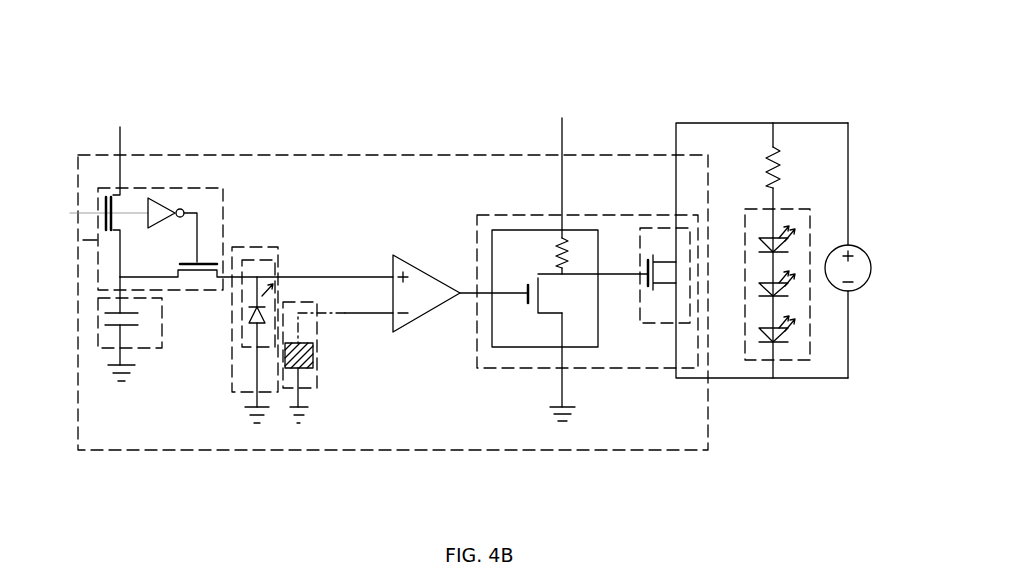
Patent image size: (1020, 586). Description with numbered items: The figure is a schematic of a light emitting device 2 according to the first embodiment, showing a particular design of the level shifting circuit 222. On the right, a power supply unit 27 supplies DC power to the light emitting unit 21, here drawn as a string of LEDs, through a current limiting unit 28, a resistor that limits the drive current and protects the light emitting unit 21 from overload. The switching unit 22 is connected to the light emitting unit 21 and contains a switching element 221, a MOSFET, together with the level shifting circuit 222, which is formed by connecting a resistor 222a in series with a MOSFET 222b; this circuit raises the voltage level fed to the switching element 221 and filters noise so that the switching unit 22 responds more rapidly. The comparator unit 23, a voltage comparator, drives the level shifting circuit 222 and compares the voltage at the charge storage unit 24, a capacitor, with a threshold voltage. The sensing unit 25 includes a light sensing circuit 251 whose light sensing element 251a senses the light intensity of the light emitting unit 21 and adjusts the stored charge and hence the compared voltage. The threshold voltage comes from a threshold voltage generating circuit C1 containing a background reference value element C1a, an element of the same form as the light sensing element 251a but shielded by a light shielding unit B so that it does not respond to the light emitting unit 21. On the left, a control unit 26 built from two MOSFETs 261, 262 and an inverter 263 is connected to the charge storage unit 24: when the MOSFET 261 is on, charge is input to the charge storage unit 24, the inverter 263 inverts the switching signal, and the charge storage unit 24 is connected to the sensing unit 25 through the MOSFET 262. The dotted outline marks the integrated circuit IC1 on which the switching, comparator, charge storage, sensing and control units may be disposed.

The light emitting device 2 is at (88, 40).
The integrated circuit IC1 is at (493, 155).
The light emitting unit 21 is at (812, 338).
The switching unit 22 is at (575, 215).
The switching element 221 is at (650, 326).
The level shifting circuit 222 is at (510, 348).
The resistor 222a is at (560, 238).
The MOSFET 222b is at (526, 286).
The comparator unit 23 is at (404, 256).
The charge storage unit 24 is at (153, 348).
The sensing unit 25 is at (276, 246).
The light sensing circuit 251 is at (257, 260).
The light sensing element 251a is at (253, 311).
The control unit 26 is at (77, 240).
The MOSFET 261 is at (117, 195).
The MOSFET 262 is at (205, 262).
The inverter 263 is at (160, 200).
The power supply unit 27 is at (873, 263).
The current limiting unit 28 is at (785, 167).
The threshold voltage generating circuit C1 is at (308, 333).
The background reference value element C1a is at (316, 357).
The light shielding unit B is at (308, 391).